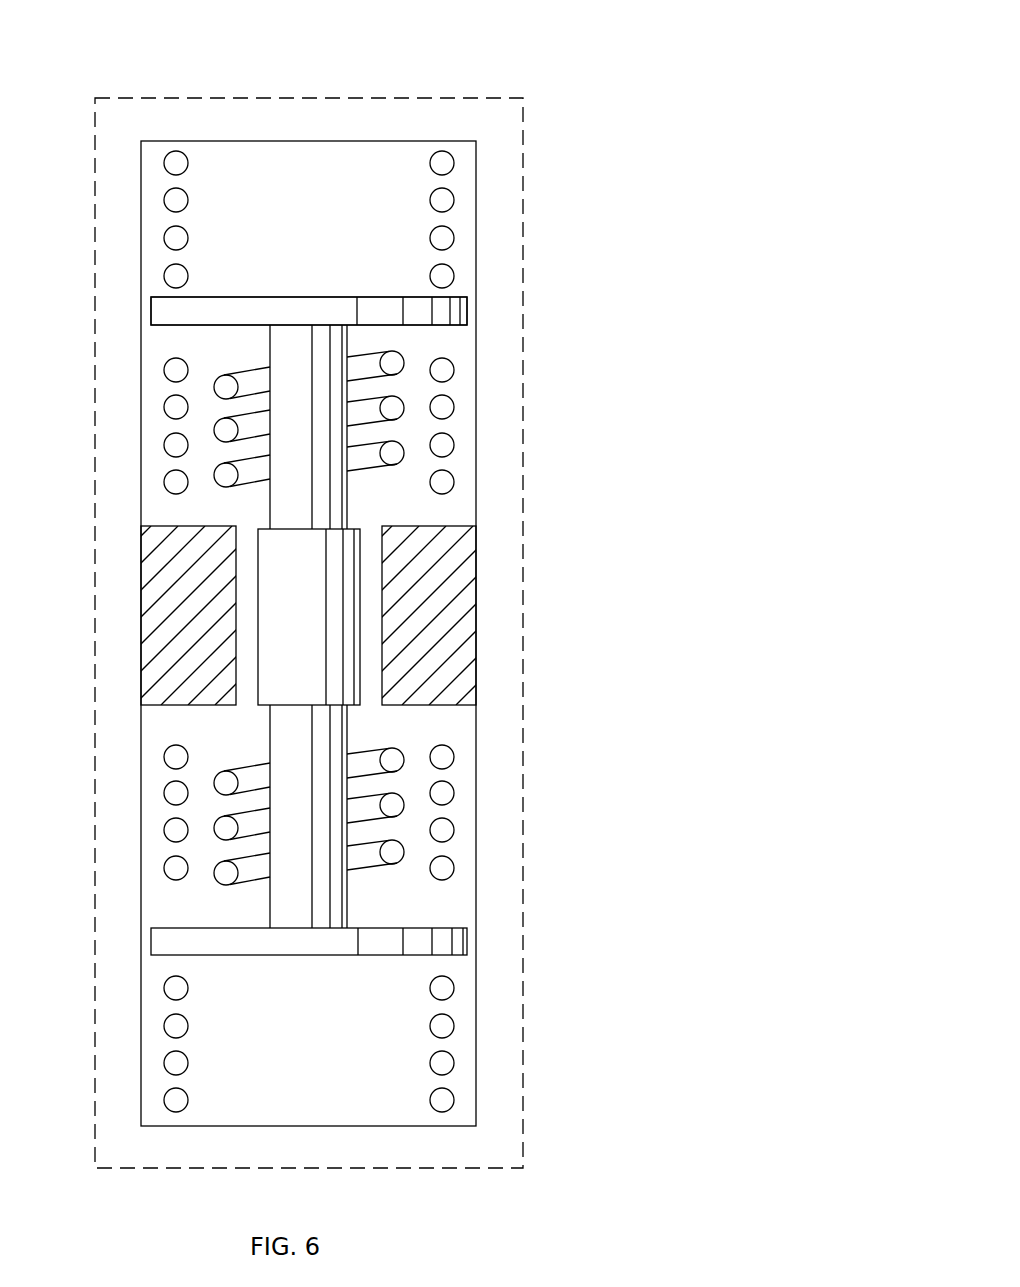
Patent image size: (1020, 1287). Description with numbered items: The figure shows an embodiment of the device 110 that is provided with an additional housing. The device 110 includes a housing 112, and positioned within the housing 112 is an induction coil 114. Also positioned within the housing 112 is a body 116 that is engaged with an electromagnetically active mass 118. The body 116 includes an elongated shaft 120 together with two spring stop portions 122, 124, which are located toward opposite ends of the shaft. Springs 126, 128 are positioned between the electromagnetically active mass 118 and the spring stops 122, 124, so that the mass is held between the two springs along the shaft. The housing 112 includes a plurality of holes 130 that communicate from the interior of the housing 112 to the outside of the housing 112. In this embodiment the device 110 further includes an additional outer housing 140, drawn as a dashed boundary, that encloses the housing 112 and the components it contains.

The device 110 is at (545, 62).
The housing 112 is at (460, 139).
The induction coil 114 is at (460, 671).
The body 116 is at (467, 312).
The electromagnetically active mass 118 is at (363, 599).
The elongated shaft 120 is at (347, 500).
The spring stop portion 122 is at (325, 297).
The spring stop portion 124 is at (467, 940).
The spring 126 is at (403, 358).
The spring 128 is at (402, 795).
The holes 130 is at (454, 163).
The outer housing 140 is at (523, 1047).